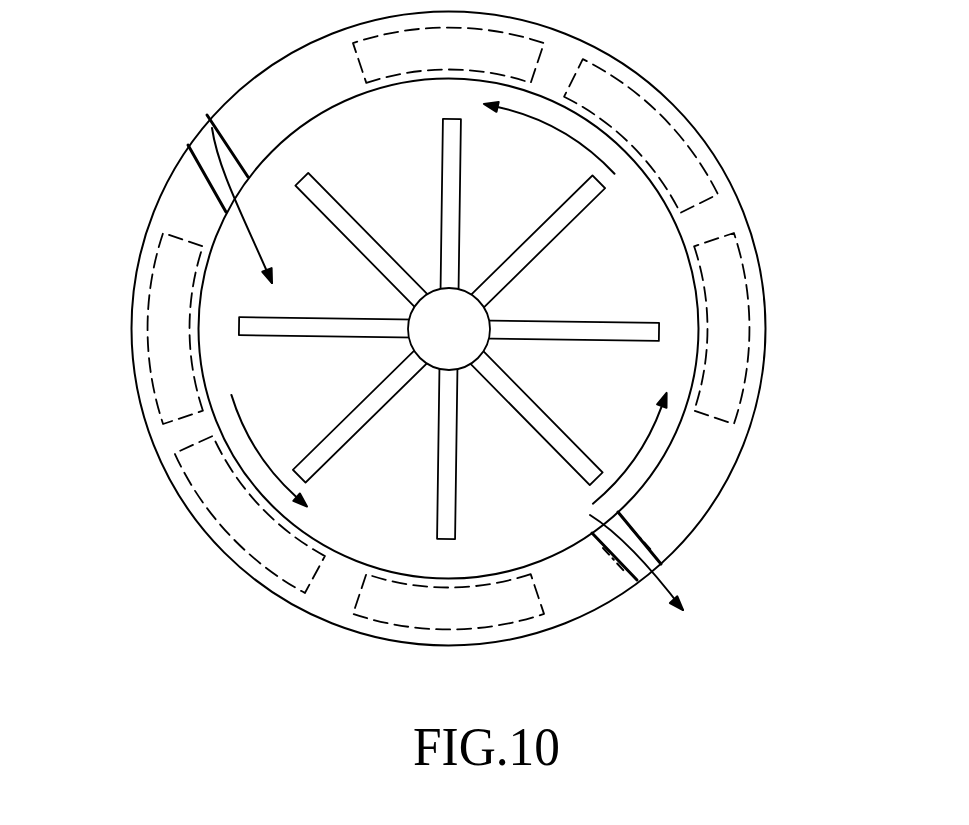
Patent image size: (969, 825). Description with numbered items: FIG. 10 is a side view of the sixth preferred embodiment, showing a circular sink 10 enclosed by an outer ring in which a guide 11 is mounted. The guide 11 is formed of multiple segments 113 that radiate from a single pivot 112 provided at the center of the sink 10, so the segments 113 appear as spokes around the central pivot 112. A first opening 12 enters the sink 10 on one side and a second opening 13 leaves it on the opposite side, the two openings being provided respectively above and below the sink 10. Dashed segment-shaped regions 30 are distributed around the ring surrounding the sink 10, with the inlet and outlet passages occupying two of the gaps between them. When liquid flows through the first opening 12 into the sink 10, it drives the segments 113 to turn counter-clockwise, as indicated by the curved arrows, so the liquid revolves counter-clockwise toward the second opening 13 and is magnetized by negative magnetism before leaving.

The sink 10 is at (743, 200).
The guide 11 is at (502, 163).
The first opening 12 is at (222, 145).
The second opening 13 is at (642, 583).
The chamber segments 30 is at (673, 160).
The pivot 112 is at (432, 362).
The segment 113 is at (347, 225).